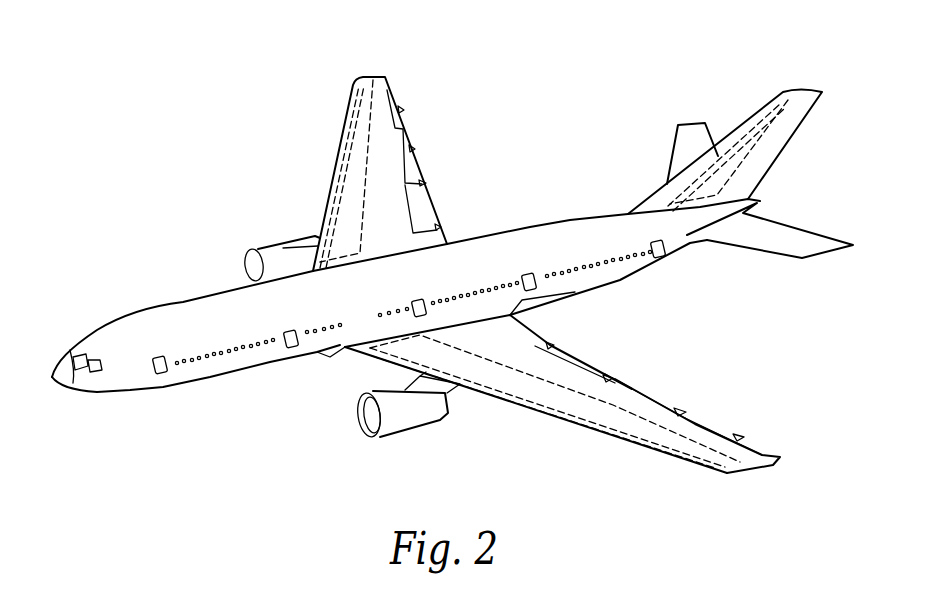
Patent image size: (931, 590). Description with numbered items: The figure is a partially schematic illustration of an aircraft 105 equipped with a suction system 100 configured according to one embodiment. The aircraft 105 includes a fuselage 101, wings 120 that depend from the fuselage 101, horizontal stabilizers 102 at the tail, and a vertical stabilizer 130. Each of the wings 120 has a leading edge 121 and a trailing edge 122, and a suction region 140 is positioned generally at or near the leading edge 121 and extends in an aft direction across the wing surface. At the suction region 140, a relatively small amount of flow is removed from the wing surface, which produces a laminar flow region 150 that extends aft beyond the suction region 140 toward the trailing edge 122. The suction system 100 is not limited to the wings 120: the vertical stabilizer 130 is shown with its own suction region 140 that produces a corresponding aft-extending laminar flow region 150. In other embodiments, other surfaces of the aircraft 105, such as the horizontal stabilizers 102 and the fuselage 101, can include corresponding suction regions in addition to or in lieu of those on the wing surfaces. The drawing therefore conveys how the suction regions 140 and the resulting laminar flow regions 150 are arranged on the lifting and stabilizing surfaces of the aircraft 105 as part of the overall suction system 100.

The suction system 100 is at (647, 336).
The fuselage 101 is at (183, 302).
The horizontal stabilizers 102 is at (689, 140).
The aircraft 105 is at (238, 424).
The wings 120 is at (384, 80).
The leading edge 121 is at (632, 446).
The trailing edge 122 is at (705, 417).
The vertical stabilizer 130 is at (762, 112).
The suction region 140 is at (337, 148).
The laminar flow region 150 is at (357, 173).